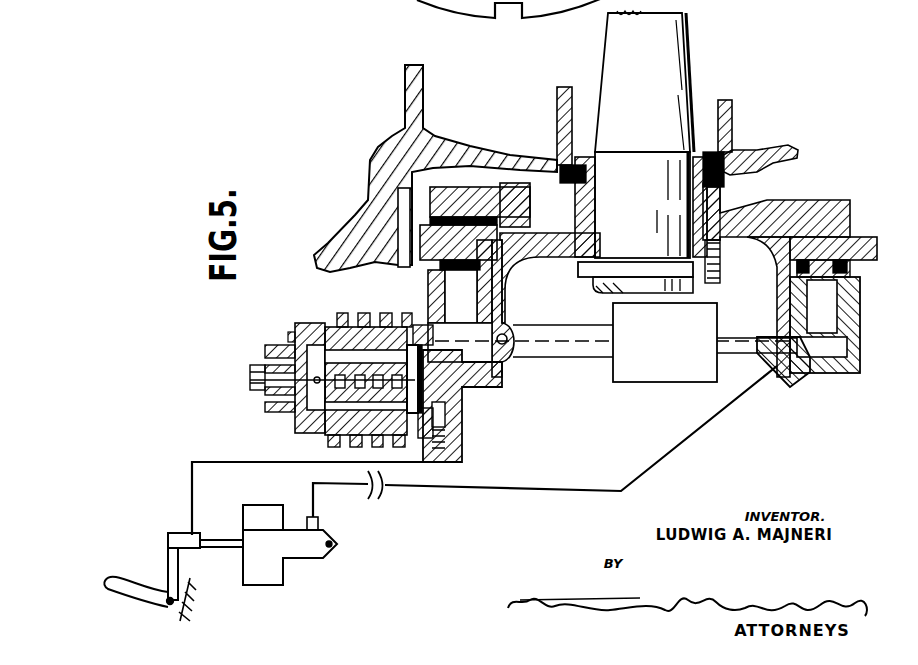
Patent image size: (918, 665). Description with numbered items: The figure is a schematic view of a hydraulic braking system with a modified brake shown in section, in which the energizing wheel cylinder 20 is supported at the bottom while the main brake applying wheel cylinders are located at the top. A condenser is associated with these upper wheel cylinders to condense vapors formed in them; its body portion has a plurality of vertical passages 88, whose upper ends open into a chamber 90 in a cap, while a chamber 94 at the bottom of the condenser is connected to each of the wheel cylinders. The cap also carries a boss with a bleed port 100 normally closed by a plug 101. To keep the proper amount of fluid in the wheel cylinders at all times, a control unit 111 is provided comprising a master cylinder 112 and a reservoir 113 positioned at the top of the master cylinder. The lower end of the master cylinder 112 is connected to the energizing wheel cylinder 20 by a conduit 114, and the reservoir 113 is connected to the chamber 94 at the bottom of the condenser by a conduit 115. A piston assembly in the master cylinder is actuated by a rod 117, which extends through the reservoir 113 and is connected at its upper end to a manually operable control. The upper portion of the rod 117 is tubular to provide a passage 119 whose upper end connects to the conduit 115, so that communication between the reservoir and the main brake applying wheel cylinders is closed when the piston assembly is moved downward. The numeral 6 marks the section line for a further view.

The section line of FIG. 6 is at (246, 381).
The energizing wheel cylinder 20 is at (863, 340).
The vertical passages 88 is at (350, 355).
The chamber 90 is at (311, 322).
The chamber 94 is at (387, 312).
The bleed port 100 is at (290, 358).
The plug 101 is at (262, 372).
The control unit 111 is at (281, 506).
The master cylinder 112 is at (303, 562).
The reservoir 113 is at (267, 507).
The conduit 114 is at (575, 490).
The conduit 115 is at (390, 467).
The rod 117 is at (226, 540).
The passage 119 is at (163, 572).